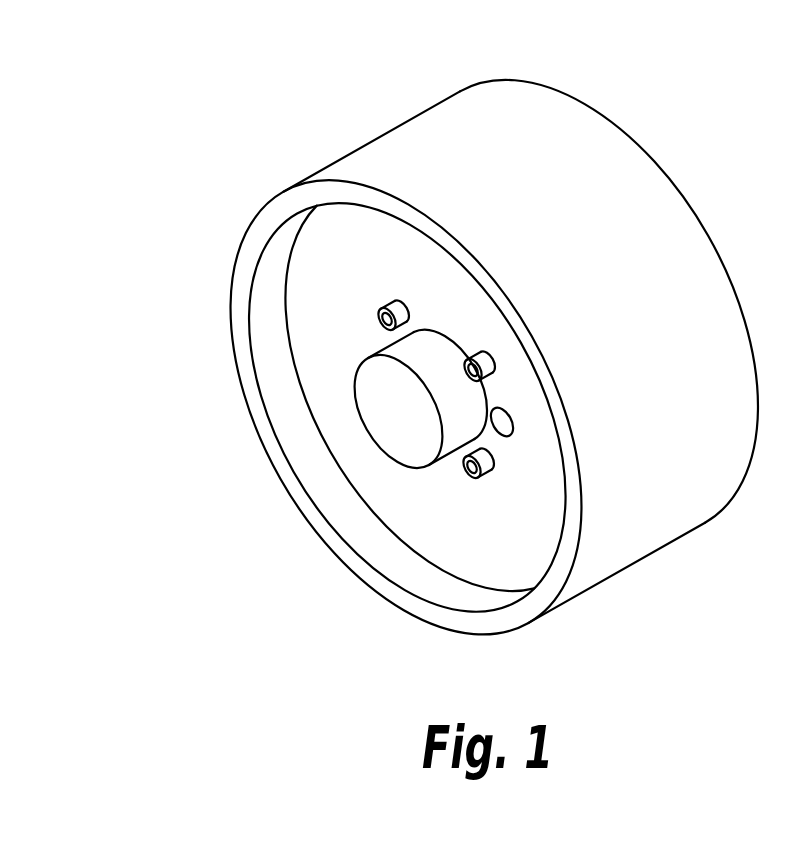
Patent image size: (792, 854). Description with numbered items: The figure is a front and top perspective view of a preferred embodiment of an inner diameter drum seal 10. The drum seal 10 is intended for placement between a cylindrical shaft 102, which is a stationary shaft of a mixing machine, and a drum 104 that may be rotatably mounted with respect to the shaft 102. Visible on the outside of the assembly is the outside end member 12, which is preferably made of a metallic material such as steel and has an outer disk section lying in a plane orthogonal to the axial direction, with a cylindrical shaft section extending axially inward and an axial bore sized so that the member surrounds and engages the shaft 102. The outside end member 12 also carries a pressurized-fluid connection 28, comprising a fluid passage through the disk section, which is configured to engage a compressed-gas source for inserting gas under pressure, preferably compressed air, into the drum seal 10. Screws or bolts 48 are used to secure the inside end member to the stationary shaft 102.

The drum seal 10 is at (152, 141).
The drum 104 is at (600, 147).
The outside end member 12 is at (508, 553).
The cylindrical shaft 102 is at (390, 418).
The screws or bolts 48 is at (495, 362).
The pressurized-fluid connection 28 is at (510, 422).